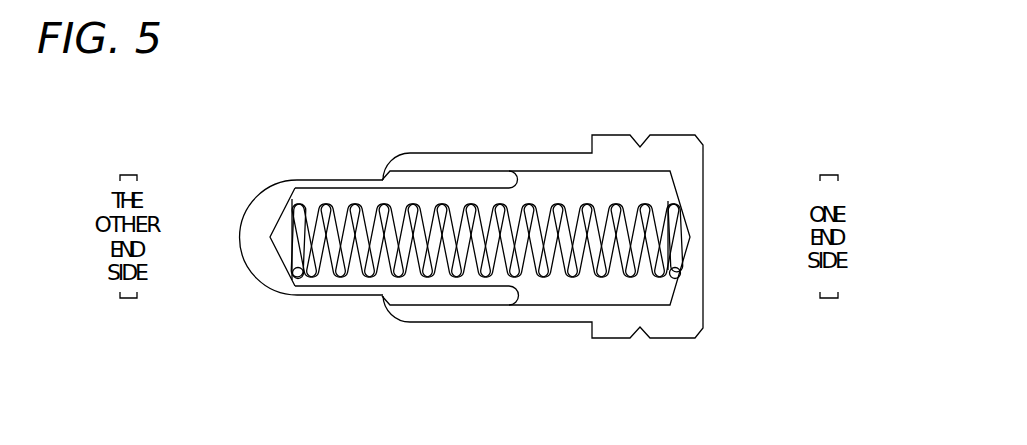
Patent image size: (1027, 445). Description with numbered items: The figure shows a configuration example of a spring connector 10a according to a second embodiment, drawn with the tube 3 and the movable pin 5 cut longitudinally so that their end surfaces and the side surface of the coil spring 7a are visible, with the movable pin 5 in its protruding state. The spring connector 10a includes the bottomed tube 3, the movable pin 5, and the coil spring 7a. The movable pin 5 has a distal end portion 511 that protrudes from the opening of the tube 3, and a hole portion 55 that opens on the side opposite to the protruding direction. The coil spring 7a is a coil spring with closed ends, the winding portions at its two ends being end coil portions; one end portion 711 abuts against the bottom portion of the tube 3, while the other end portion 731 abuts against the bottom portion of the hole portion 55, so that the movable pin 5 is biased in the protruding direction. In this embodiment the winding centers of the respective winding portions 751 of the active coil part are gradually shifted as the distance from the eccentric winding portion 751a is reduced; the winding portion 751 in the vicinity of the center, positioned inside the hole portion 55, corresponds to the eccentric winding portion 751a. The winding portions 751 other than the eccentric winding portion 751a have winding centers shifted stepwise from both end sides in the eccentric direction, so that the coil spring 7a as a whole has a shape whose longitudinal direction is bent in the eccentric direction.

The spring connector 10a is at (588, 73).
The tube 3 is at (700, 193).
The movable pin 5 is at (259, 183).
The distal end portion 511 is at (252, 218).
The hole portion 55 is at (446, 280).
The coil spring 7a is at (585, 292).
The one end portion 711 is at (681, 275).
The other end portion 731 is at (294, 278).
The winding portion 751 is at (413, 199).
The eccentric winding portion 751a is at (500, 199).